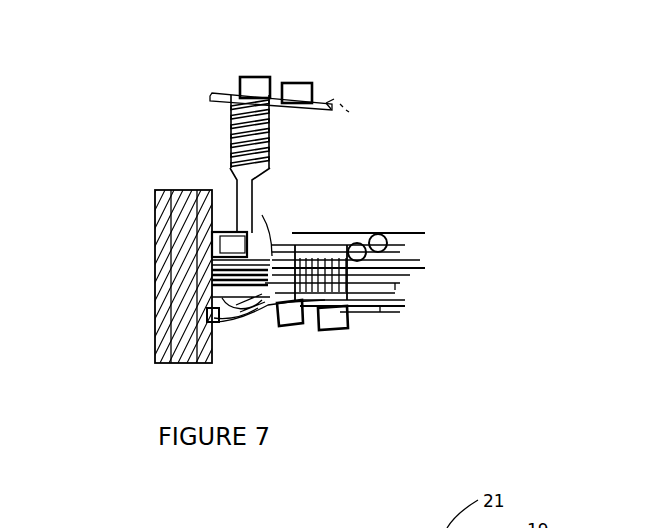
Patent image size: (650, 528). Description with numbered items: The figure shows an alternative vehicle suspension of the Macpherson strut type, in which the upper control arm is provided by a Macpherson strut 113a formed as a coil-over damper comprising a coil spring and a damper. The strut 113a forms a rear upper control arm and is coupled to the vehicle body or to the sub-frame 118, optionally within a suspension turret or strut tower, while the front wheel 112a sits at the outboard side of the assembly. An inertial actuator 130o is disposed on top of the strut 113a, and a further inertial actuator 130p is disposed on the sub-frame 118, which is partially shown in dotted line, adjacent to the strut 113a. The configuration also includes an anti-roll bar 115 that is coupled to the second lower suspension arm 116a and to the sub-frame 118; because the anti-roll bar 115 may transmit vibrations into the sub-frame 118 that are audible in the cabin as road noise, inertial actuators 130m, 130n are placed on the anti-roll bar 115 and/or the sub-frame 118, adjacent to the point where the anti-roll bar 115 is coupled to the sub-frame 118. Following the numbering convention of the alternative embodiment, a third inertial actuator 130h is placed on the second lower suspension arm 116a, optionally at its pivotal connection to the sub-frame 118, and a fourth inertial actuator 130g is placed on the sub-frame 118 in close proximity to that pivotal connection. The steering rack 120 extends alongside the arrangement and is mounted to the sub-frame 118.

The inertial actuator 130o is at (250, 77).
The further inertial actuator 130p is at (300, 83).
The sub-frame 118 is at (328, 102).
The Macpherson strut 113a is at (226, 165).
The anti-roll bar 115 is at (274, 240).
The inertial actuator 130m is at (347, 243).
The inertial actuator 130n is at (372, 233).
The front wheel 112a is at (155, 277).
The second lower suspension arm 116a is at (237, 327).
The third inertial actuator 130h is at (292, 327).
The fourth inertial actuator 130g is at (330, 329).
The steering rack 120 is at (395, 286).